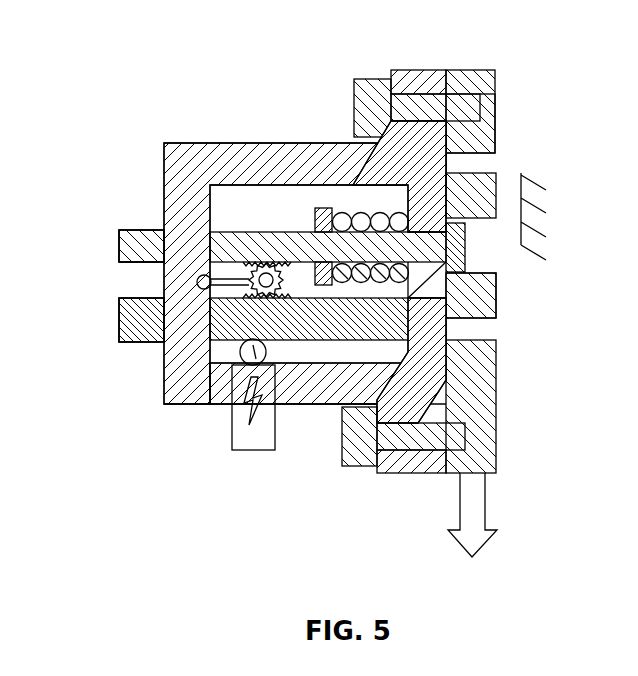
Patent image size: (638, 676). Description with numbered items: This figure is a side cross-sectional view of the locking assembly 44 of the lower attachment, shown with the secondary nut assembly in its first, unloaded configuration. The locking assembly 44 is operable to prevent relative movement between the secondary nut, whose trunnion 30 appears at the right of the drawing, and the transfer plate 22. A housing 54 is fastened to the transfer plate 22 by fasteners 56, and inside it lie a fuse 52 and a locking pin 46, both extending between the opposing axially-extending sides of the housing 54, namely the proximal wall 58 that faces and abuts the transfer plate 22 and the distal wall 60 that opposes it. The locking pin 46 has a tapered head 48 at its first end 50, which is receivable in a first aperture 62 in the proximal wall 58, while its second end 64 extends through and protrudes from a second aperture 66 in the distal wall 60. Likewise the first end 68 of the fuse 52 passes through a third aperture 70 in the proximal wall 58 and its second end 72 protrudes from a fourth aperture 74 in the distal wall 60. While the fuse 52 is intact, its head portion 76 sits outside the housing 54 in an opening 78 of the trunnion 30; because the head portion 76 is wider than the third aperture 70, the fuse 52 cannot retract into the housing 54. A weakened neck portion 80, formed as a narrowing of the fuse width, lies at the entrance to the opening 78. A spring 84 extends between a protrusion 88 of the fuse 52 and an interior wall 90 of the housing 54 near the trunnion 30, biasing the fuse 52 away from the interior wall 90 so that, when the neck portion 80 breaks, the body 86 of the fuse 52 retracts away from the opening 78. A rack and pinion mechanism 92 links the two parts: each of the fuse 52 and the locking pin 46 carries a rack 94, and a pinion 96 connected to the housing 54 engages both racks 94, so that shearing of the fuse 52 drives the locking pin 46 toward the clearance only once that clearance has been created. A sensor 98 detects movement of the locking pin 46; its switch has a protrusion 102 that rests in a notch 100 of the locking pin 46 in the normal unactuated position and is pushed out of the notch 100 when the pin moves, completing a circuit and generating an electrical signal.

The transfer plate 22 is at (492, 70).
The trunnion 30 is at (440, 325).
The locking assembly 44 is at (130, 58).
The locking pin 46 is at (178, 404).
The tapered head 48 is at (430, 300).
The first end 50 is at (392, 420).
The fuse 52 is at (237, 240).
The housing 54 is at (360, 157).
The fasteners 56 is at (378, 78).
The proximal wall 58 is at (497, 147).
The distal wall 60 is at (180, 200).
The first aperture 62 is at (480, 305).
The second end 64 is at (140, 342).
The second aperture 66 is at (198, 281).
The first end 68 is at (360, 400).
The third aperture 70 is at (470, 272).
The second end 72 is at (127, 248).
The fourth aperture 74 is at (142, 232).
The head portion 76 is at (462, 252).
The opening 78 is at (530, 208).
The weakened neck portion 80 is at (467, 237).
The spring 84 is at (360, 207).
The body 86 is at (303, 252).
The protrusion 88 is at (323, 207).
The interior wall 90 is at (447, 110).
The rack and pinion mechanism 92 is at (70, 243).
The rack 94 is at (210, 298).
The pinion 96 is at (119, 260).
The sensor 98 is at (232, 425).
The notch 100 is at (222, 380).
The protrusion 102 is at (262, 362).